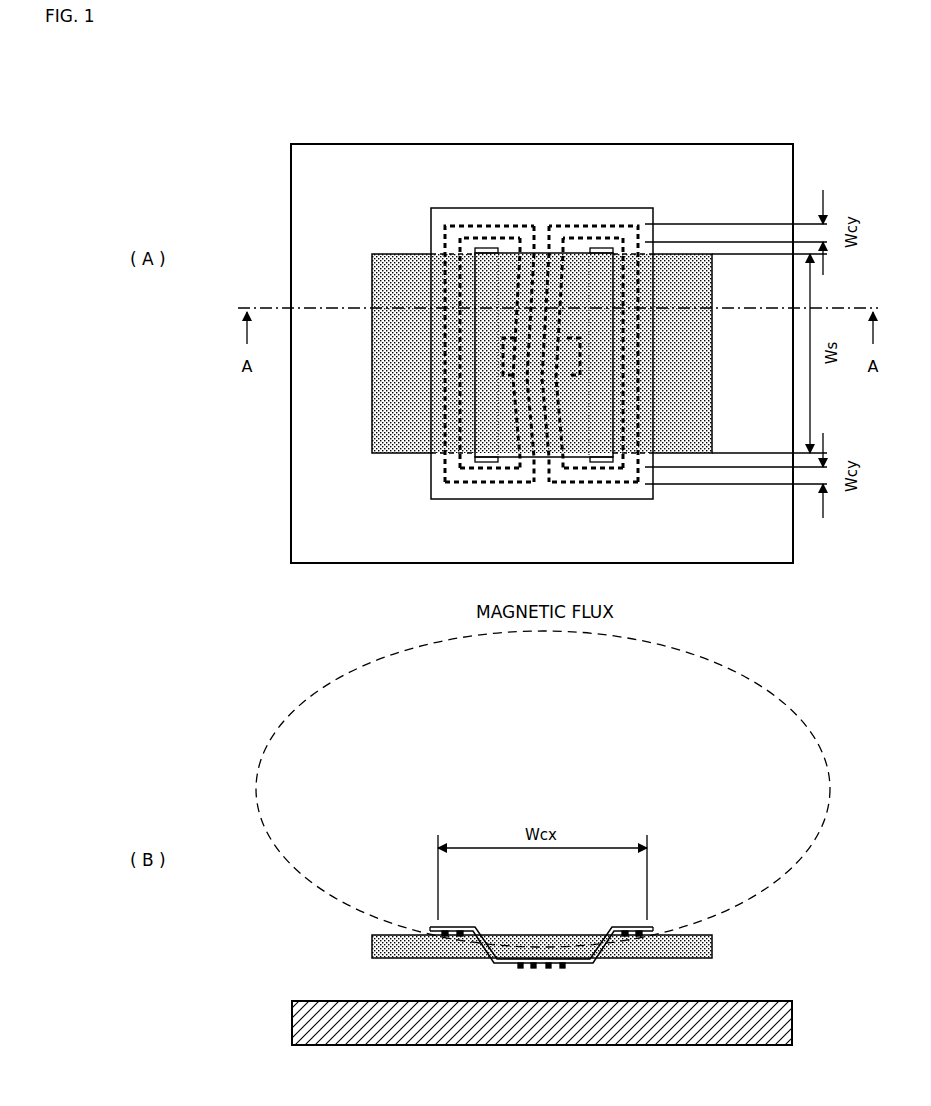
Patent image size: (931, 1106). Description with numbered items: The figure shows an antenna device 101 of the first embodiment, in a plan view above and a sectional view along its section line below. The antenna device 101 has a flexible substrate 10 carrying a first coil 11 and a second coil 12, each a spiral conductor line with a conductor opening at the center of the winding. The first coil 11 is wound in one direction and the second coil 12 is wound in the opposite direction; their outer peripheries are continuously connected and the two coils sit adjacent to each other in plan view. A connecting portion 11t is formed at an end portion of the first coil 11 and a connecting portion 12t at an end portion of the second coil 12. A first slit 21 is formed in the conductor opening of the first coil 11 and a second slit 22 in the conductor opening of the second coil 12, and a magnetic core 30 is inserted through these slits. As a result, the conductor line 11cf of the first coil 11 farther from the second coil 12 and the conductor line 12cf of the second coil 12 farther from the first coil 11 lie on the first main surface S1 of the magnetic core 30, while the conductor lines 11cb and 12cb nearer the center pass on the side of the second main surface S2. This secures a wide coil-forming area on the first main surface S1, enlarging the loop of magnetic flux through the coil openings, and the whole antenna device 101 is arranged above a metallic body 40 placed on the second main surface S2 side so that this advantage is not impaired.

The antenna device 101 is at (704, 94).
The metallic body 40 is at (793, 144).
The magnetic core 30 is at (712, 275).
The flexible substrate 10 is at (653, 208).
The first coil 11 is at (443, 200).
The second coil 12 is at (544, 200).
The connecting portion 11t is at (500, 352).
The connecting portion 12t is at (583, 352).
The conductor line of the first coil 11cf is at (440, 424).
The conductor line of the second coil 12cf is at (645, 424).
The conductor line of the first coil 11cb is at (533, 968).
The conductor line of the second coil 12cb is at (549, 968).
The first slit 21 is at (481, 463).
The second slit 22 is at (603, 463).
The first main surface S1 is at (542, 935).
The second main surface S2 is at (662, 960).